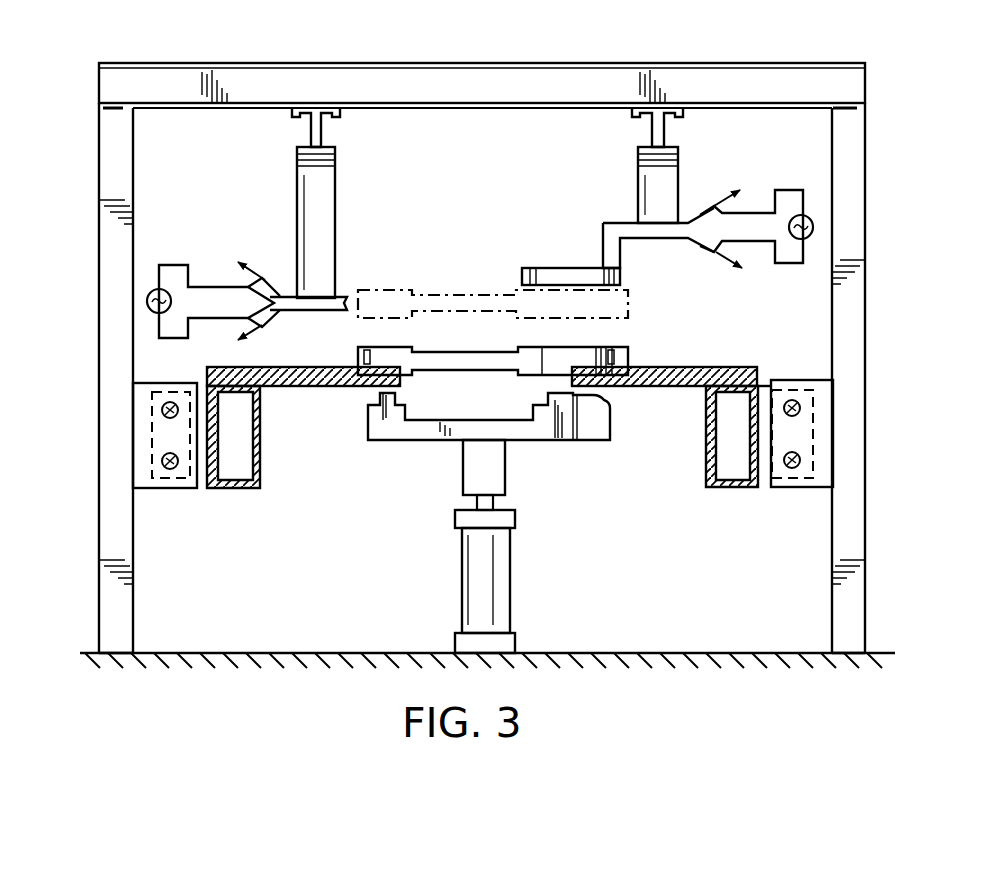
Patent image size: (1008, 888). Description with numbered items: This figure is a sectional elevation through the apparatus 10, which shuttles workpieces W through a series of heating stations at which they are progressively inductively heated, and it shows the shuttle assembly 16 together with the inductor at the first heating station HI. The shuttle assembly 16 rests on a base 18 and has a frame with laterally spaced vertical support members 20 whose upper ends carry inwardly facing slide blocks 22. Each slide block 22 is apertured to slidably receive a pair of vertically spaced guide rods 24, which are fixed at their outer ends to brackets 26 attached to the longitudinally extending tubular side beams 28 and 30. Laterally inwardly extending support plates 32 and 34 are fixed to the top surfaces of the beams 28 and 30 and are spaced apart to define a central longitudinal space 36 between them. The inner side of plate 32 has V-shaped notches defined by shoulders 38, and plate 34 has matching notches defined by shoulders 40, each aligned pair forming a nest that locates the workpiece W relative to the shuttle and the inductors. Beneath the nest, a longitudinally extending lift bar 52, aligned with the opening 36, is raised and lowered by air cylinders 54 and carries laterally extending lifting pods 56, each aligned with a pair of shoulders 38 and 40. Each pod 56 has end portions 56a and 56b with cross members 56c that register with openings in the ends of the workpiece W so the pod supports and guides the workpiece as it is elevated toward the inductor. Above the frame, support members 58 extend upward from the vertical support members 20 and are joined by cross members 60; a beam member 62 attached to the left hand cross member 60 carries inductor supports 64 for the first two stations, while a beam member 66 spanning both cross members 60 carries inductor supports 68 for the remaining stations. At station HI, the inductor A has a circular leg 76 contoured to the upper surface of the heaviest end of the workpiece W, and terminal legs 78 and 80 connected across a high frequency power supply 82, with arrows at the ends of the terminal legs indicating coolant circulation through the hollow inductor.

The apparatus 10 is at (206, 53).
The shuttle assembly 16 is at (266, 496).
The base 18 is at (302, 650).
The vertical support members 20 is at (135, 625).
The slide blocks 22 is at (197, 492).
The guide rods 24 is at (168, 404).
The brackets 26 is at (150, 442).
The tubular side beam 28 is at (730, 484).
The tubular side beam 30 is at (246, 490).
The support plate 32 is at (700, 366).
The support plate 34 is at (330, 390).
The central space 36 is at (460, 386).
The shoulders 38 is at (636, 364).
The shoulders 40 is at (346, 368).
The lift bar 52 is at (466, 480).
The air cylinders 54 is at (500, 597).
The lifting pods 56 is at (534, 444).
The end portion 56a is at (610, 412).
The end portion 56b is at (374, 412).
The cross members 56c is at (372, 412).
The support members 58 is at (120, 153).
The cross members 60 is at (496, 63).
The beam member 62 is at (653, 133).
The inductor supports 64 is at (648, 186).
The beam member 66 is at (324, 133).
The inductor supports 68 is at (306, 195).
The circular leg 76 is at (521, 279).
The terminal leg 78 is at (607, 240).
The terminal leg 80 is at (700, 228).
The high frequency power supply 82 is at (813, 222).
The workpiece W is at (488, 354).
The inductor A is at (575, 266).
The heating station HI is at (518, 246).